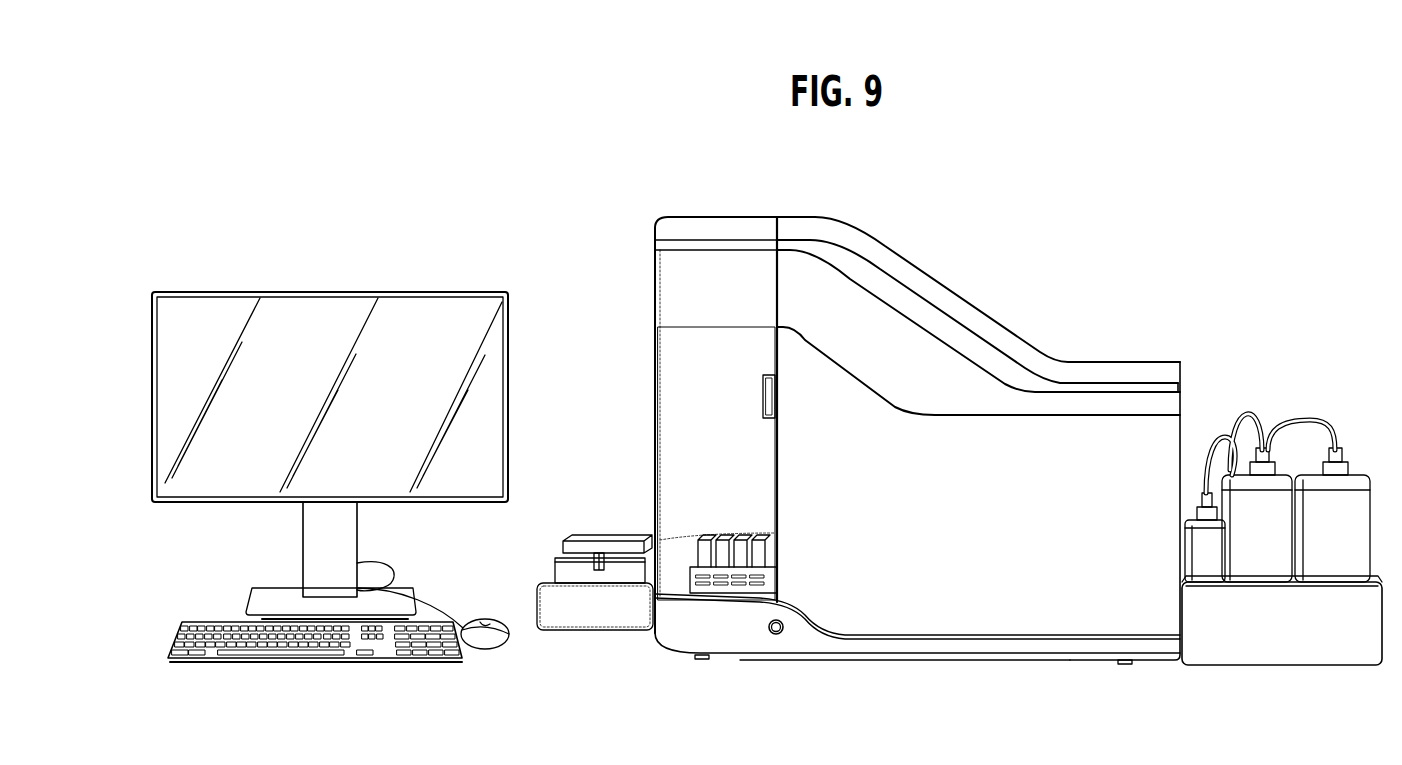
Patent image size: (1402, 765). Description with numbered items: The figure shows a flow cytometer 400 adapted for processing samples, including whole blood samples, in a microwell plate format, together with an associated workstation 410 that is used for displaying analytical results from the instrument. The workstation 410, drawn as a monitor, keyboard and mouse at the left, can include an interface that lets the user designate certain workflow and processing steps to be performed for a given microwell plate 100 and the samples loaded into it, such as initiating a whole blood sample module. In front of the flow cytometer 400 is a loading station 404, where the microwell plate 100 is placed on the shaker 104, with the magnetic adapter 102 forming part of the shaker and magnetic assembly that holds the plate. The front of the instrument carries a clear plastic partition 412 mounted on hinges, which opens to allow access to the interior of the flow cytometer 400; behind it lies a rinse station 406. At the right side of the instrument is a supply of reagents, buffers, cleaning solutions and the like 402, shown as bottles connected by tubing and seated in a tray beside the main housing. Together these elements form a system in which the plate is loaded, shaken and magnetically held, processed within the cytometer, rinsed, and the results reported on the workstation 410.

The microwell plate 100 is at (564, 529).
The magnetic adapter 102 is at (557, 555).
The shaker 104 is at (553, 572).
The flow cytometer 400 is at (1091, 307).
The supply of reagents, buffers, cleaning solutions 402 is at (1275, 418).
The loading station 404 is at (603, 633).
The rinse station 406 is at (708, 528).
The workstation 410 is at (312, 687).
The clear plastic partition 412 is at (687, 360).